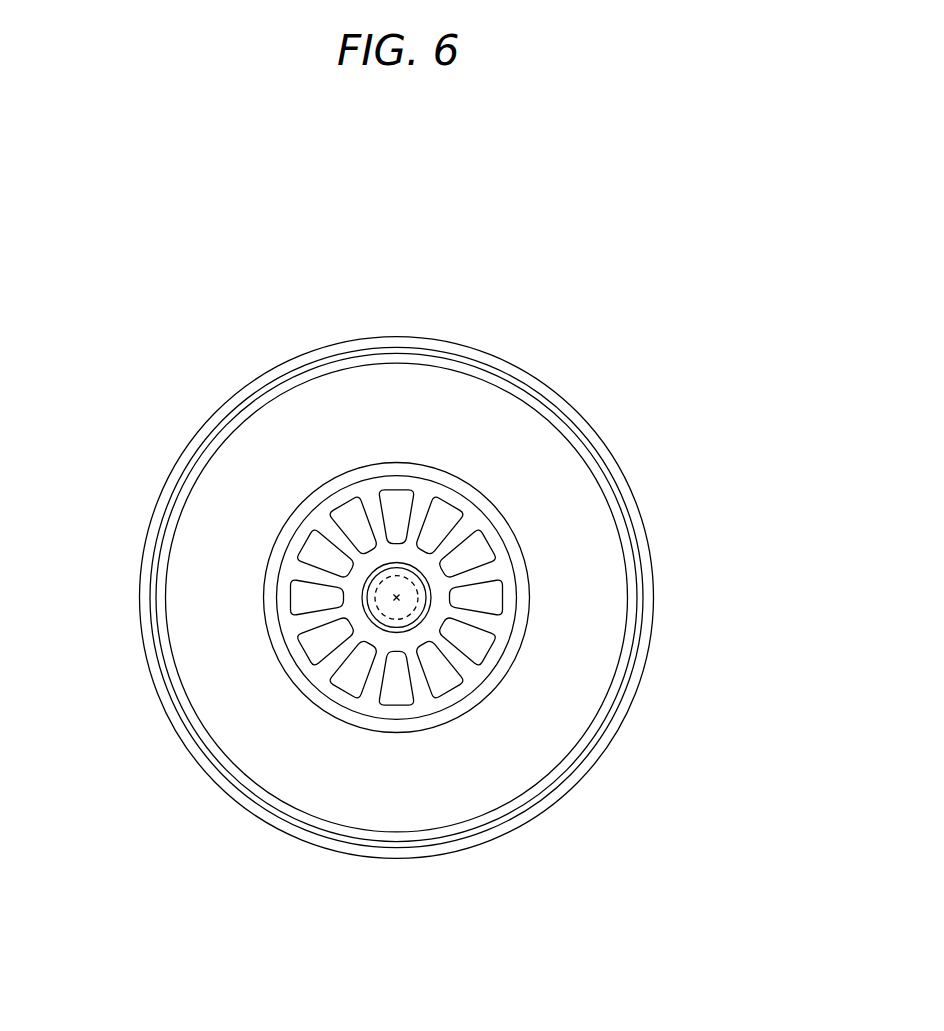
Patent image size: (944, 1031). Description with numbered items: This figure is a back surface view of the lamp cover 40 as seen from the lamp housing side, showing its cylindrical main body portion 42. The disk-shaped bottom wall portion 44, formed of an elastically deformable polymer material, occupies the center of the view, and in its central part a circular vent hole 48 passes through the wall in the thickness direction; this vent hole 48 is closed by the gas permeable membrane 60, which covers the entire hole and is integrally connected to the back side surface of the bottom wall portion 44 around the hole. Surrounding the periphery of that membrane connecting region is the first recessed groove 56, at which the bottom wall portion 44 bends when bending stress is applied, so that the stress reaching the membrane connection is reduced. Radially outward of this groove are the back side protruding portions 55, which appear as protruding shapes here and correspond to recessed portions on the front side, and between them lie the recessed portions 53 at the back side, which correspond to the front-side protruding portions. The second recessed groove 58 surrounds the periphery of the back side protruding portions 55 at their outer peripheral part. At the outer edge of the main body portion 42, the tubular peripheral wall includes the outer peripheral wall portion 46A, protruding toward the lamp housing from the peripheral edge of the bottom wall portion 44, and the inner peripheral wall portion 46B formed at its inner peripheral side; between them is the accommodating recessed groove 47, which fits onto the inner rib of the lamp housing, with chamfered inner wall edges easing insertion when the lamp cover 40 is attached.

The lamp cover 40 is at (665, 292).
The main body portion 42 is at (572, 793).
The bottom wall portion 44 is at (577, 694).
The outer peripheral wall portion 46A is at (490, 358).
The inner peripheral wall portion 46B is at (600, 477).
The accommodating recessed groove 47 is at (548, 402).
The vent hole 48 is at (397, 598).
The recessed portions 53 is at (400, 695).
The back side protruding portions 55 is at (442, 595).
The first recessed groove 56 is at (363, 602).
The second recessed groove 58 is at (340, 715).
The gas permeable membrane 60 is at (365, 590).